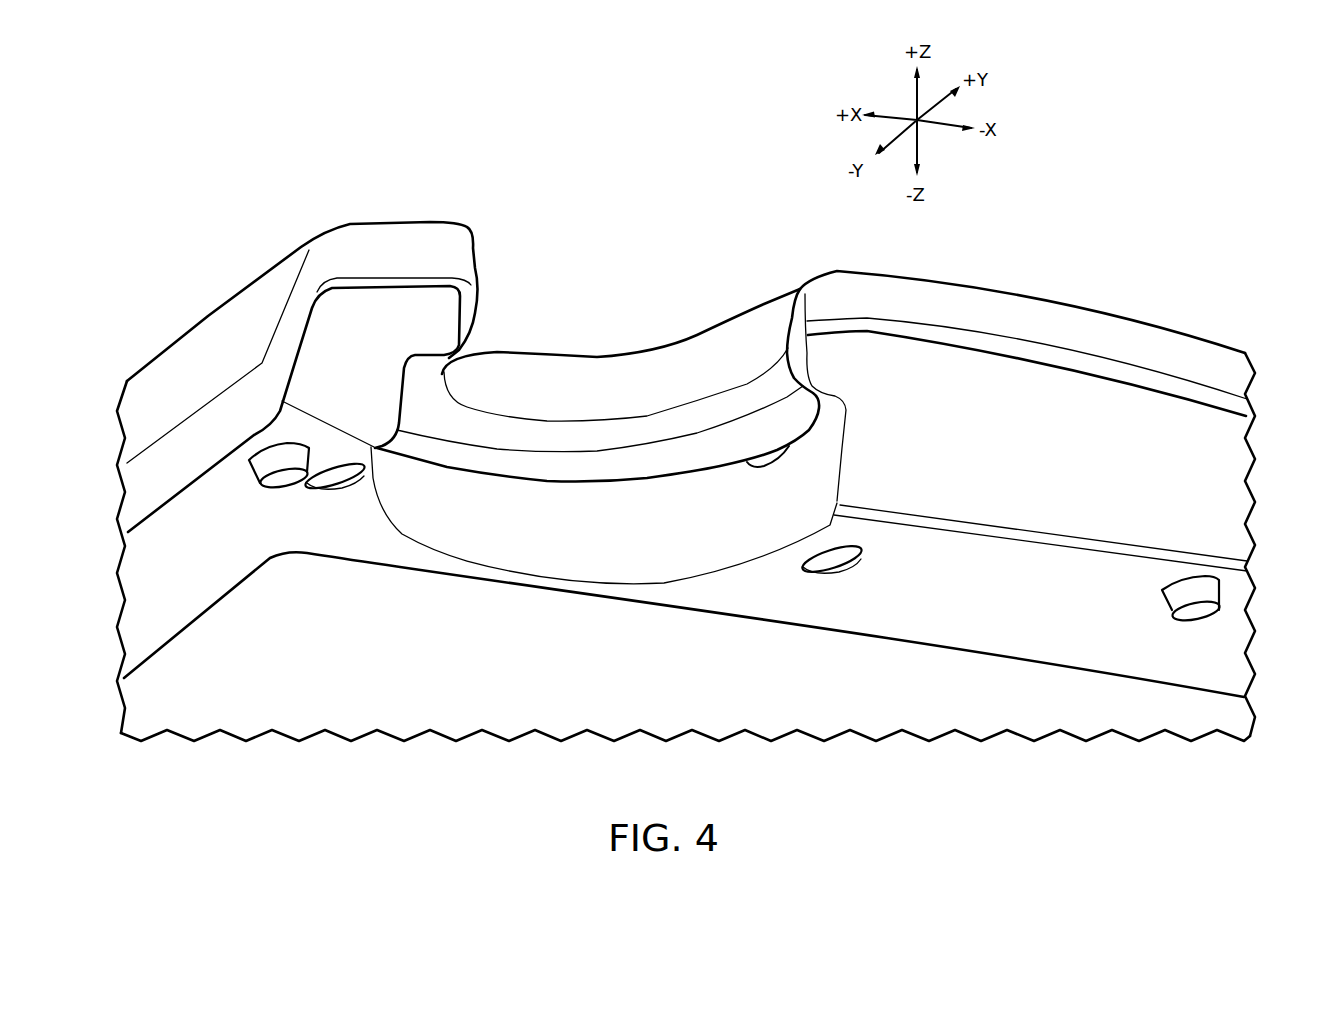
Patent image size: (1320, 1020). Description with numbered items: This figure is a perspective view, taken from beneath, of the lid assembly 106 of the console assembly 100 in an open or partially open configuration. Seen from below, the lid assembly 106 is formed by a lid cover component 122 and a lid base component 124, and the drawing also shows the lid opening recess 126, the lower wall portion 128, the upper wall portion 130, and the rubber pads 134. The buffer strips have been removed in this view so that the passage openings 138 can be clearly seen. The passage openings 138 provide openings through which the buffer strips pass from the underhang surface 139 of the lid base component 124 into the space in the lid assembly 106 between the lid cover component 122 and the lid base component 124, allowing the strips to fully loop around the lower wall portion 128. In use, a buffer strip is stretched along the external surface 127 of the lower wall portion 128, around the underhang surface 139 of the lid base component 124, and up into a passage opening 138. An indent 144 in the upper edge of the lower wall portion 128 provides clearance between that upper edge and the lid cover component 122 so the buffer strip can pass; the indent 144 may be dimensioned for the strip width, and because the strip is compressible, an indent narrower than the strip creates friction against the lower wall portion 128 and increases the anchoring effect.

The console assembly 100 is at (178, 211).
The lid assembly 106 is at (1138, 236).
The lid cover component 122 is at (857, 286).
The lid base component 124 is at (1249, 434).
The lid opening recess 126 is at (578, 301).
The external surface 127 is at (614, 560).
The lower wall portion 128 is at (584, 538).
The upper wall portion 130 is at (763, 315).
The rubber pads 134 is at (260, 478).
The passage openings 138 is at (345, 487).
The underhang surface 139 is at (927, 673).
The indent 144 is at (755, 471).